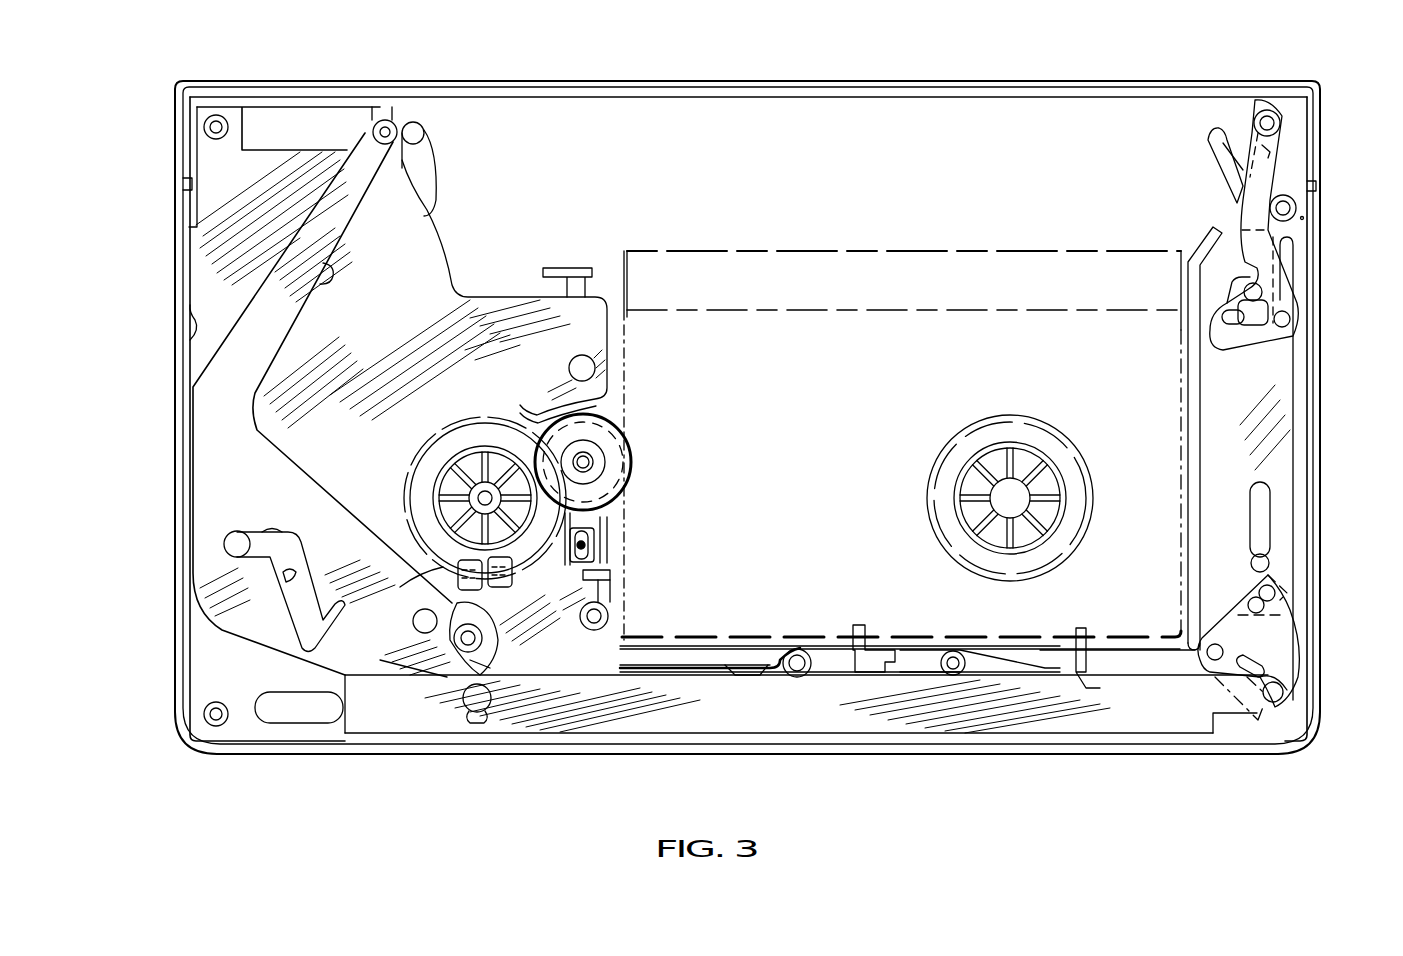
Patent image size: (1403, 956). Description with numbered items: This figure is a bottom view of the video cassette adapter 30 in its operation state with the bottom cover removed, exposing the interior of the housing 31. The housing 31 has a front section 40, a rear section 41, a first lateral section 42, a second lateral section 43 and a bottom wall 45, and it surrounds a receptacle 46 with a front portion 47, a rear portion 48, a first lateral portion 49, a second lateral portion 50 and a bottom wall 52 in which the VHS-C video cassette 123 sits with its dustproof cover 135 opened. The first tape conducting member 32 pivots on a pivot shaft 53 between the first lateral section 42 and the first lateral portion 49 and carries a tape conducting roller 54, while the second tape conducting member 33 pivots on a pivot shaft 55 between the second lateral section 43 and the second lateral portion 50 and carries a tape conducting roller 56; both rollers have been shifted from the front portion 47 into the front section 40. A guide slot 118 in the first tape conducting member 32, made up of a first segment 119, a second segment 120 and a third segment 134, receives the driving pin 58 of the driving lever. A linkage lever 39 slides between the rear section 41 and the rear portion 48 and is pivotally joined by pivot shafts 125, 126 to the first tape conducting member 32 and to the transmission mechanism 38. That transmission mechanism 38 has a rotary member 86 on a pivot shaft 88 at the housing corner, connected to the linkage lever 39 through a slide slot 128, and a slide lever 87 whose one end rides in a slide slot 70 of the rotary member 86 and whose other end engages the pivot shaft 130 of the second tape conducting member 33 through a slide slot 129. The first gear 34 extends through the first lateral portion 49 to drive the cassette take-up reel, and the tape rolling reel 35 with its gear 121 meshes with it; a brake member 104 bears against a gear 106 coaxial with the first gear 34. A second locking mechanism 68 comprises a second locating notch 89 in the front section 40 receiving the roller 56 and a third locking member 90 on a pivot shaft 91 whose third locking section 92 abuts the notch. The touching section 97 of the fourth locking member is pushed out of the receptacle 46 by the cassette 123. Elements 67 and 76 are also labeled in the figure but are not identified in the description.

The video cassette adapter 30 is at (151, 150).
The housing 31 is at (180, 301).
The first tape conducting member 32 is at (290, 322).
The second tape conducting member 33 is at (1237, 168).
The first gear 34 is at (633, 460).
The tape rolling reel 35 is at (470, 435).
The transmission mechanism 38 is at (1231, 490).
The linkage lever 39 is at (728, 718).
The front section 40 is at (995, 105).
The rear section 41 is at (938, 742).
The first lateral section 42 is at (190, 323).
The second lateral section 43 is at (1304, 382).
The bottom wall 45 is at (468, 276).
The receptacle 46 is at (1178, 370).
The front portion 47 is at (758, 268).
The rear portion 48 is at (803, 636).
The first lateral portion 49 is at (627, 372).
The second lateral portion 50 is at (1185, 503).
The bottom wall 52 is at (901, 444).
The pivot shaft 53 is at (425, 608).
The tape conducting roller 54 is at (392, 118).
The pivot shaft 55 is at (1270, 340).
The tape conducting roller 56 is at (1255, 112).
The driving pin 58 is at (238, 531).
The reel gear 67 is at (418, 448).
The second locking mechanism 68 is at (1130, 167).
The slide slot 70 is at (1272, 618).
The pivot pin 76 is at (383, 125).
The rotary member 86 is at (1300, 640).
The slide lever 87 is at (1300, 463).
The pivot shaft 88 is at (1222, 650).
The second locating notch 89 is at (1257, 100).
The third locking member 90 is at (1210, 150).
The pivot shaft 91 is at (1303, 218).
The third locking section 92 is at (1283, 140).
The touching section 97 is at (860, 624).
The brake member 104 is at (597, 516).
The gear 106 is at (628, 420).
The guide slot 118 is at (315, 502).
The first segment 119 is at (338, 595).
The second segment 120 is at (292, 570).
The gear 121 is at (425, 500).
The VHS-C video cassette 123 is at (902, 250).
The pivot shaft 125 is at (466, 712).
The pivot shaft 126 is at (1295, 702).
The slide slot 128 is at (1265, 668).
The slide slot 129 is at (1228, 320).
The pivot shaft 130 is at (1244, 297).
The third segment 134 is at (268, 530).
The dustproof cover 135 is at (650, 86).